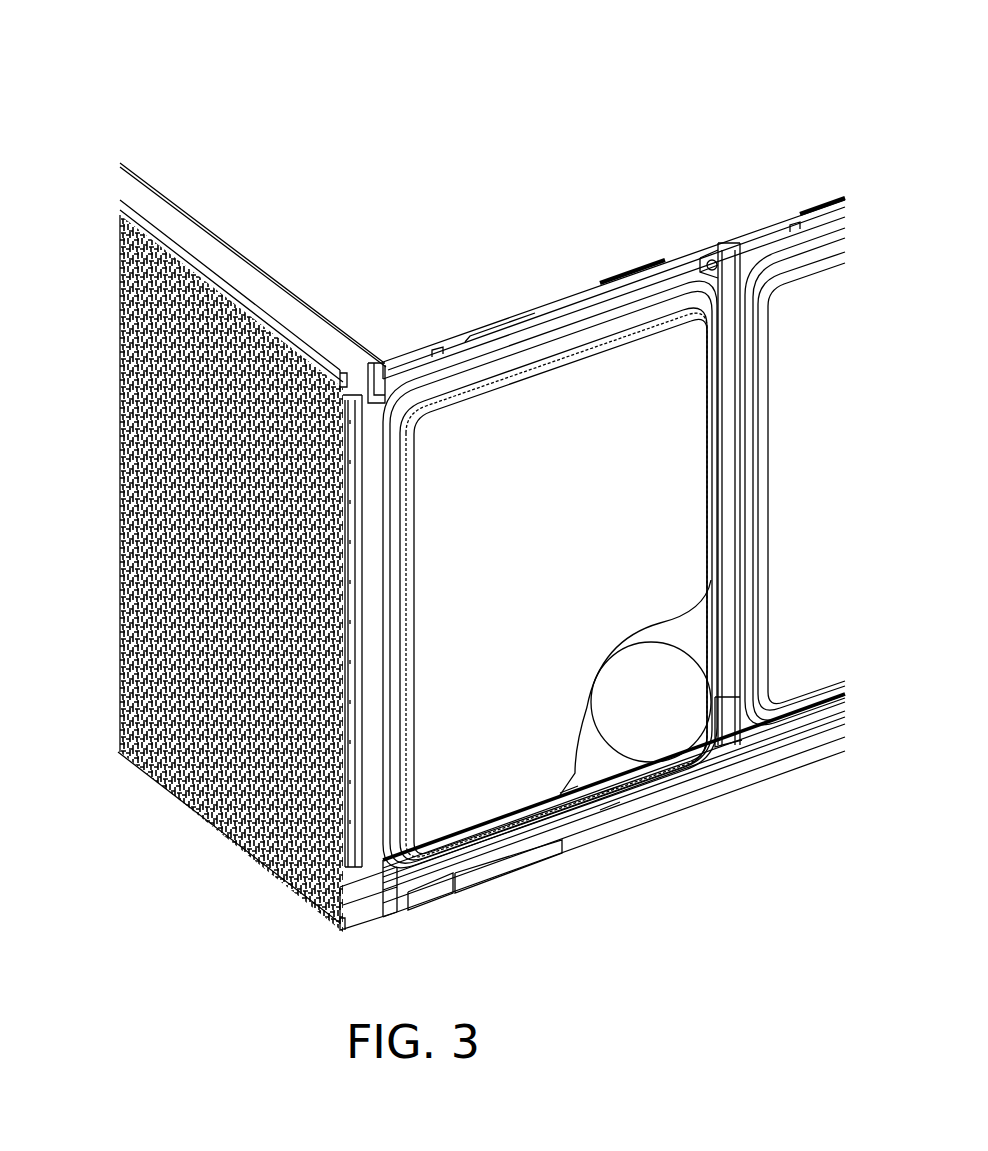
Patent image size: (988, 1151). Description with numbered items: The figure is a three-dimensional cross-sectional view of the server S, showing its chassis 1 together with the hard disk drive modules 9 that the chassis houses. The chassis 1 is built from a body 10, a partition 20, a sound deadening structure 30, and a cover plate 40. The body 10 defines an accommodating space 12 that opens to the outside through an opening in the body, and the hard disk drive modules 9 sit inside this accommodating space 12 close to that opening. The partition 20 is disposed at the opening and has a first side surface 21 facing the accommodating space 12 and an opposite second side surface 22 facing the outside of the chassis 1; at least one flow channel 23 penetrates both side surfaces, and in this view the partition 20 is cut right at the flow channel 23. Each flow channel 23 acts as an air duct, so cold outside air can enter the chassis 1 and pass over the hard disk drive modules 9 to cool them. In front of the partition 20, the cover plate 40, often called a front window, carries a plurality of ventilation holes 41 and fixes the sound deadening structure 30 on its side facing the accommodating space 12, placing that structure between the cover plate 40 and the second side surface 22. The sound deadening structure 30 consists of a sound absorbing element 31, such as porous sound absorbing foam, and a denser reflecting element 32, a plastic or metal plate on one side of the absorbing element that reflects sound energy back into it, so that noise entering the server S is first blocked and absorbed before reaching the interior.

The server S is at (100, 48).
The chassis 1 is at (126, 124).
The hard disk drive module 9 is at (518, 753).
The body 10 is at (185, 182).
The accommodating space 12 is at (748, 728).
The partition 20 is at (373, 758).
The first side surface 21 is at (383, 480).
The second side surface 22 is at (363, 400).
The flow channel 23 is at (373, 585).
The sound deadening structure 30 is at (348, 802).
The sound absorbing element 31 is at (348, 843).
The reflecting element 32 is at (390, 840).
The cover plate 40 is at (127, 218).
The ventilation hole 41 is at (212, 750).